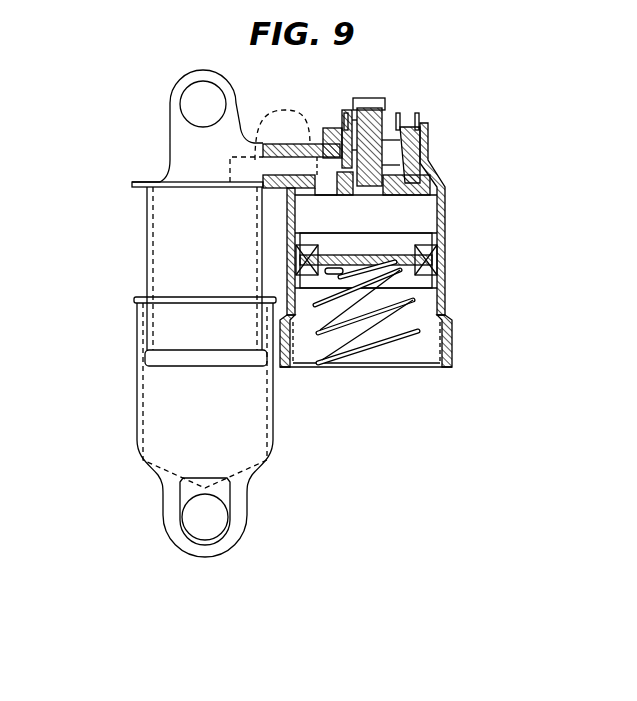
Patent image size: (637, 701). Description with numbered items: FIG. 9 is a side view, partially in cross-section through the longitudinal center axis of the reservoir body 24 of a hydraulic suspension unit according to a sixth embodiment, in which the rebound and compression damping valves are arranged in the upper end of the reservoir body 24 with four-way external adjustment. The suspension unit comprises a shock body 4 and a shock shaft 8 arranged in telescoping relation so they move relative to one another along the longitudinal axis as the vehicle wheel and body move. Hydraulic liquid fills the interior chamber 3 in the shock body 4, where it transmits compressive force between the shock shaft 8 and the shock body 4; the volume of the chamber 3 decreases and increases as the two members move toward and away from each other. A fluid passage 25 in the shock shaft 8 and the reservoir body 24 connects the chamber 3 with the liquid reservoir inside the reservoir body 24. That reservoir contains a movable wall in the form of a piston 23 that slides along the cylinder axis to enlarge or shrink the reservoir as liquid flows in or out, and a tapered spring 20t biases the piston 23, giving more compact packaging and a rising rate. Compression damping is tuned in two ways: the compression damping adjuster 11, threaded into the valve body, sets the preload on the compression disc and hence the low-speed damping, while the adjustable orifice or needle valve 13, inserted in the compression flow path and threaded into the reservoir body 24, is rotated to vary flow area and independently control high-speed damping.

The interior chamber 3 is at (183, 428).
The shock body 4 is at (137, 380).
The shock shaft 8 is at (147, 228).
The compression damping adjuster 11 is at (412, 194).
The needle valve 13 is at (418, 119).
The piston 23 is at (440, 258).
The reservoir body 24 is at (433, 168).
The fluid passage 25 is at (304, 162).
The tapered spring 20t is at (367, 345).